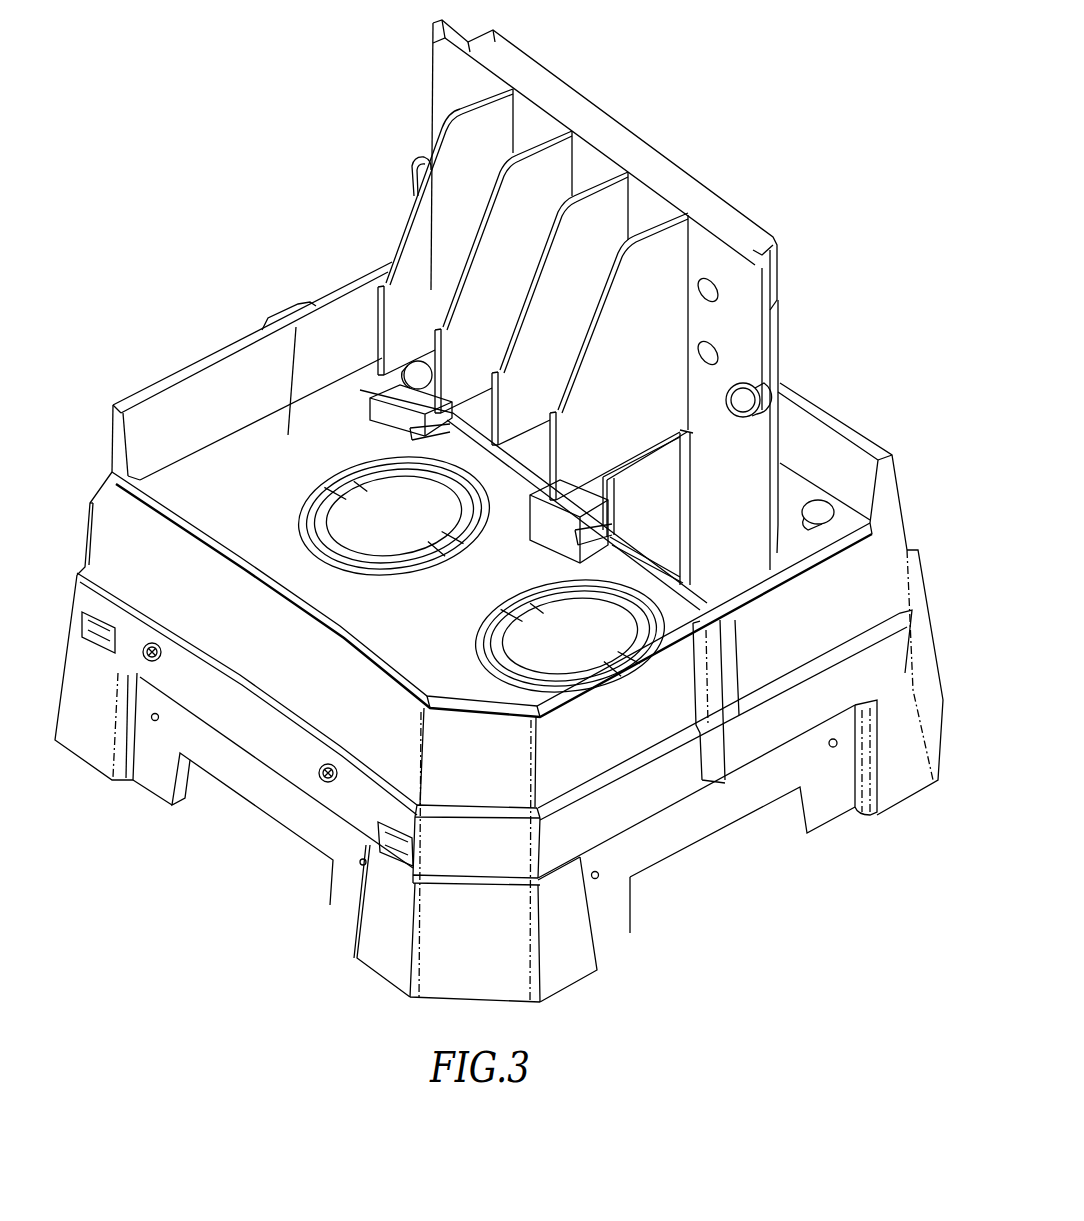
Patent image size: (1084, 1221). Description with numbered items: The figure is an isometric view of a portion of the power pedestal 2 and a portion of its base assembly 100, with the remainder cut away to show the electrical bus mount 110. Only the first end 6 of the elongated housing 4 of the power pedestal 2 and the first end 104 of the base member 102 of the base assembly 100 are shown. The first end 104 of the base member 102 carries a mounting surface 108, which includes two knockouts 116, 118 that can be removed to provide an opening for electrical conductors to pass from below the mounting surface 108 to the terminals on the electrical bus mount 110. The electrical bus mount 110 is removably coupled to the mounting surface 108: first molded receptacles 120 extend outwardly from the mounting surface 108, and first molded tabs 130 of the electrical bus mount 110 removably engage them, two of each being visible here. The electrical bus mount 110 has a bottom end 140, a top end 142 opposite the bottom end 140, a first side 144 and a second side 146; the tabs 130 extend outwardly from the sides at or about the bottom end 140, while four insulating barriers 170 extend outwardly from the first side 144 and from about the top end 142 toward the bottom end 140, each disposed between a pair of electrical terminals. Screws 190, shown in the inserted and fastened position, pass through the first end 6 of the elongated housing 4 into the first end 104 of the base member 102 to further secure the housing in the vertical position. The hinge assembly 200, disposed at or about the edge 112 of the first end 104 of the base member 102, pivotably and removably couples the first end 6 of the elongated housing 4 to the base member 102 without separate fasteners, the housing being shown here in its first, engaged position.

The power pedestal 2 is at (243, 892).
The elongated housing 4 is at (252, 336).
The first end 6 is at (914, 522).
The base assembly 100 is at (905, 458).
The base member 102 is at (92, 752).
The first end 104 is at (69, 597).
The mounting surface 108 is at (240, 492).
The electrical bus mount 110 is at (423, 108).
The edge 112 is at (802, 512).
The knockout 116 is at (396, 575).
The knockout 118 is at (492, 642).
The first molded receptacle 120 is at (406, 441).
The first molded tab 130 is at (432, 431).
The bottom end 140 is at (672, 590).
The top end 142 is at (797, 249).
The first side 144 is at (712, 243).
The second side 146 is at (651, 140).
The insulating barrier 170 is at (411, 262).
The screw 190 is at (160, 660).
The hinge assembly 200 is at (797, 467).